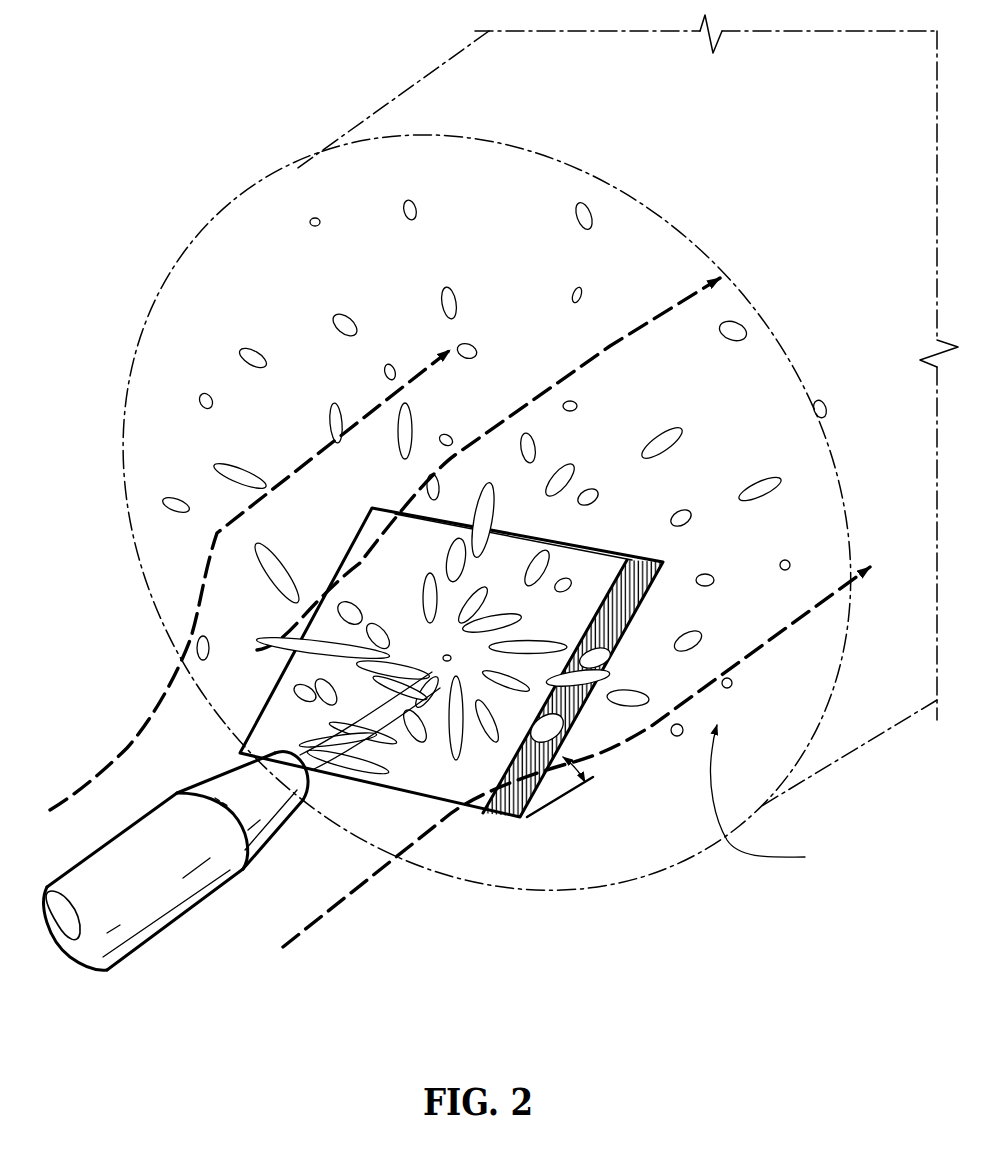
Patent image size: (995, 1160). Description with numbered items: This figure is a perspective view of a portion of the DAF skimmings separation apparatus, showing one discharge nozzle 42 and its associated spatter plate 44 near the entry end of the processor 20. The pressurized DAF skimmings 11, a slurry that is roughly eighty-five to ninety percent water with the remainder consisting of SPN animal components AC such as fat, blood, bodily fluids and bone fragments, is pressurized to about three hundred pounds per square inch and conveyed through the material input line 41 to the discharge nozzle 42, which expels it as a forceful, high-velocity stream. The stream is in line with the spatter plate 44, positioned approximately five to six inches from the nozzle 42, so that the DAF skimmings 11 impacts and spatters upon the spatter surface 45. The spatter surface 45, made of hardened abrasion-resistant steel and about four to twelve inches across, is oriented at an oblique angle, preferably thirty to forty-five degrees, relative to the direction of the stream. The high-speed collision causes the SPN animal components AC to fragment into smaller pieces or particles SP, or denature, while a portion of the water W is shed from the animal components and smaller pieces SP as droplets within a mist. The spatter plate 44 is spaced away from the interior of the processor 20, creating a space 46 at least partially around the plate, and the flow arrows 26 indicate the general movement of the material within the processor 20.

The processor 20 is at (630, 883).
The flow direction of fluid stream 26 is at (362, 415).
The space 46 is at (773, 798).
The spatter surface 45 is at (458, 780).
The spatter plate 44 is at (526, 808).
The DAF skimmings 11 is at (367, 723).
The discharge nozzle 42 is at (268, 845).
The material input line 41 is at (153, 937).
The smaller pieces or particles SP is at (592, 502).
The water W is at (453, 299).
The SPN animal components AC is at (389, 829).